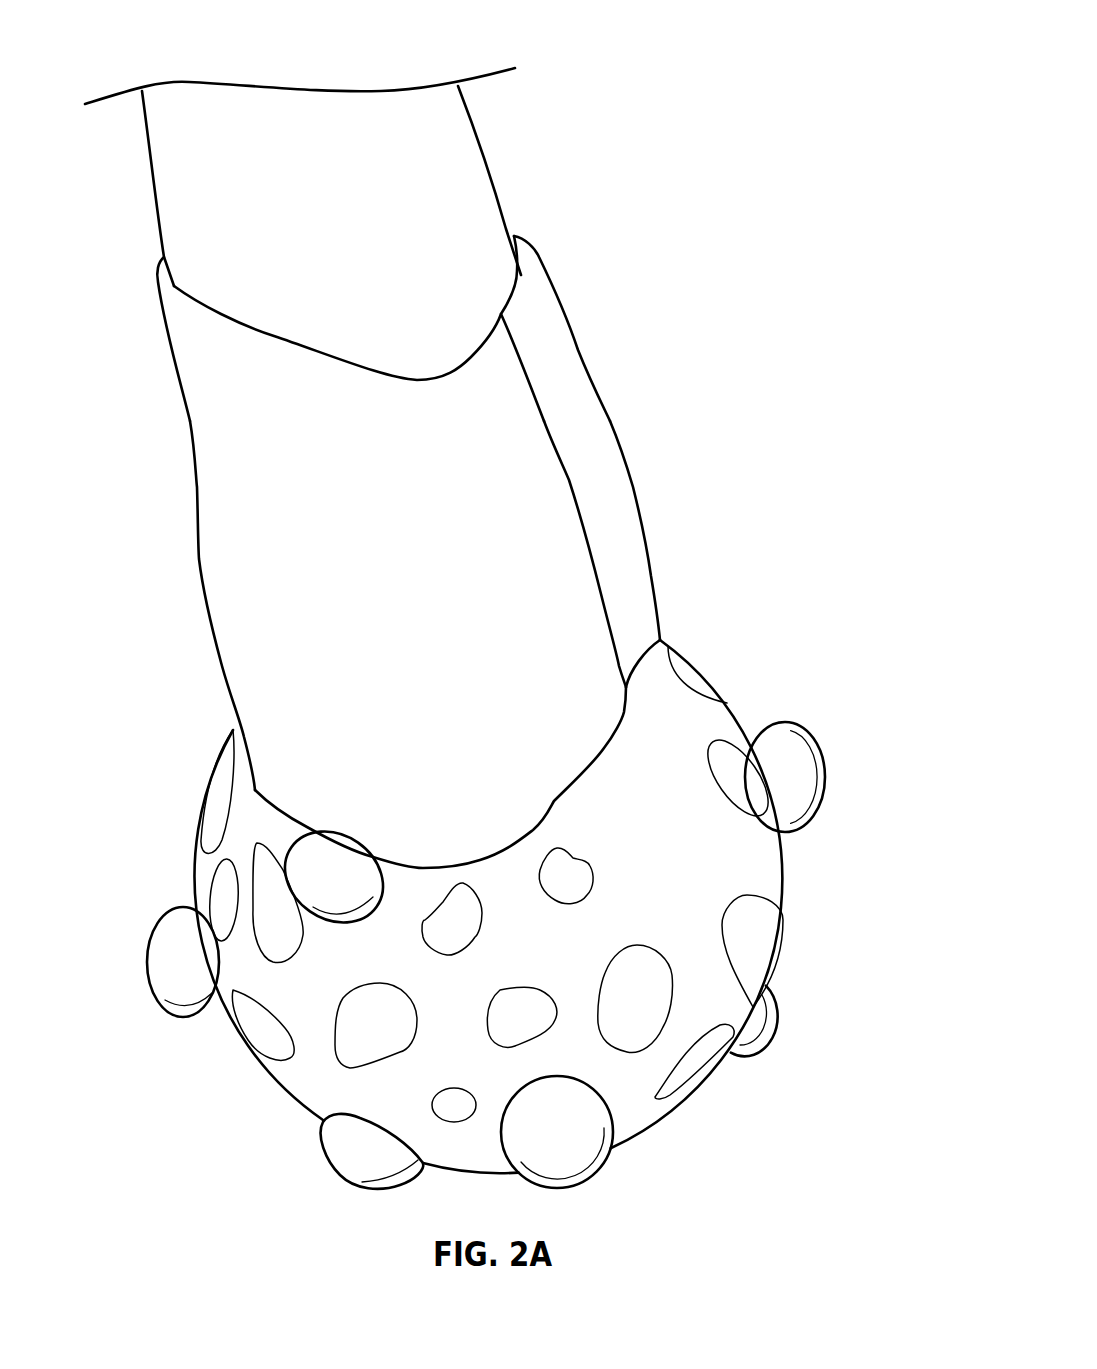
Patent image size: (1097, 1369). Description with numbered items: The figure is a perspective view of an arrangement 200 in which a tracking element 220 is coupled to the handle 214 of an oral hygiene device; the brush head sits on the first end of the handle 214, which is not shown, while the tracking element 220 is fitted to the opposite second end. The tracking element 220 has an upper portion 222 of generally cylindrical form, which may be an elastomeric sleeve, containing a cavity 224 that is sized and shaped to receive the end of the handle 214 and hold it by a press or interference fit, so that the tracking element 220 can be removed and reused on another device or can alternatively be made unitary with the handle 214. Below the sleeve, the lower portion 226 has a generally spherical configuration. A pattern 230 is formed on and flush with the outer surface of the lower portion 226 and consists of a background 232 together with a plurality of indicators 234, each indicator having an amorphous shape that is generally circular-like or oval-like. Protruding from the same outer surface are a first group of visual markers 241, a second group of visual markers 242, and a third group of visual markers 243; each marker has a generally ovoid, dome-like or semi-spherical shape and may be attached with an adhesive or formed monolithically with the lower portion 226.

The finger cover assembly 200 is at (672, 42).
The handle 214 is at (464, 120).
The tracking element 220 is at (793, 312).
The upper portion 222 is at (625, 340).
The cavity 224 is at (165, 259).
The lower portion 226 is at (797, 642).
The pattern 230 is at (257, 1087).
The background 232 is at (323, 1105).
The indicators 234 is at (690, 673).
The first group of visual markers 241 is at (283, 833).
The second group of visual markers 242 is at (163, 908).
The third group of visual markers 243 is at (335, 1203).